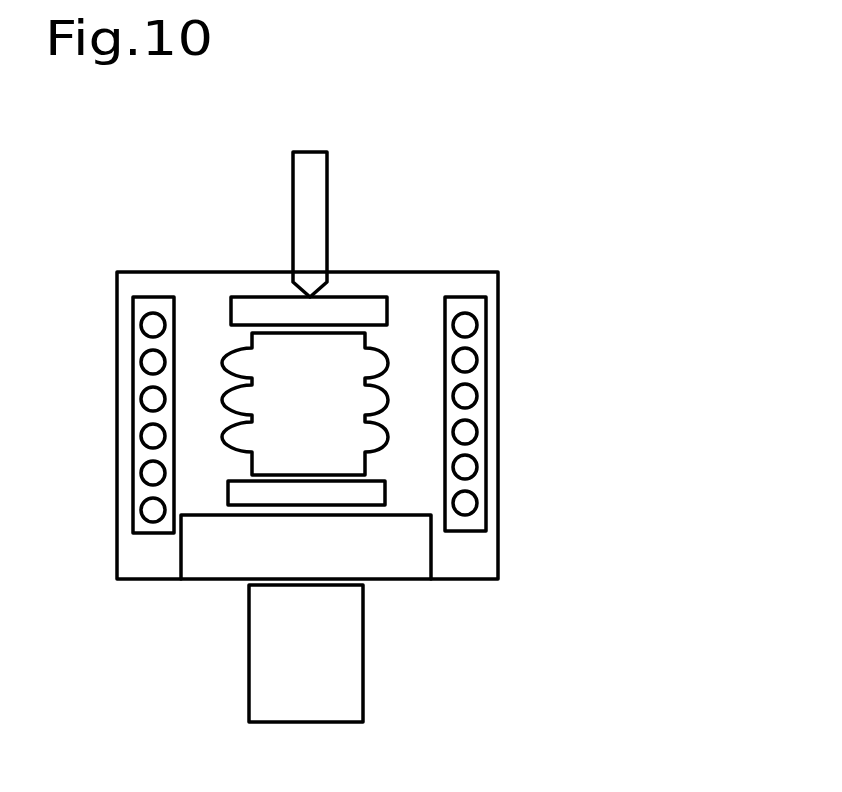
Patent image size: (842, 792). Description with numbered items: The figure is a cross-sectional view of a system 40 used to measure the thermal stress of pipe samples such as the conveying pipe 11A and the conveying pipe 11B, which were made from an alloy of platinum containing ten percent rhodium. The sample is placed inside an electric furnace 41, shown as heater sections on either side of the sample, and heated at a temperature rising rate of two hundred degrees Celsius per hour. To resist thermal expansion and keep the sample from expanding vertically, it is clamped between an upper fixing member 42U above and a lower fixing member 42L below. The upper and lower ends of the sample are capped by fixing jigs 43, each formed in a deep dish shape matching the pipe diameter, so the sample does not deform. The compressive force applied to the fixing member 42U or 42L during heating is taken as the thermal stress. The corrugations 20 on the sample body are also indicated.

The system 40 is at (523, 182).
The electric furnace 41 is at (487, 377).
The fixing member 42U is at (317, 207).
The fixing member 42L is at (363, 643).
The fixing jig 43 is at (255, 305).
The conveying pipe 11A is at (395, 338).
The conveying pipe 11B is at (395, 338).
The corrugations 20 is at (388, 365).